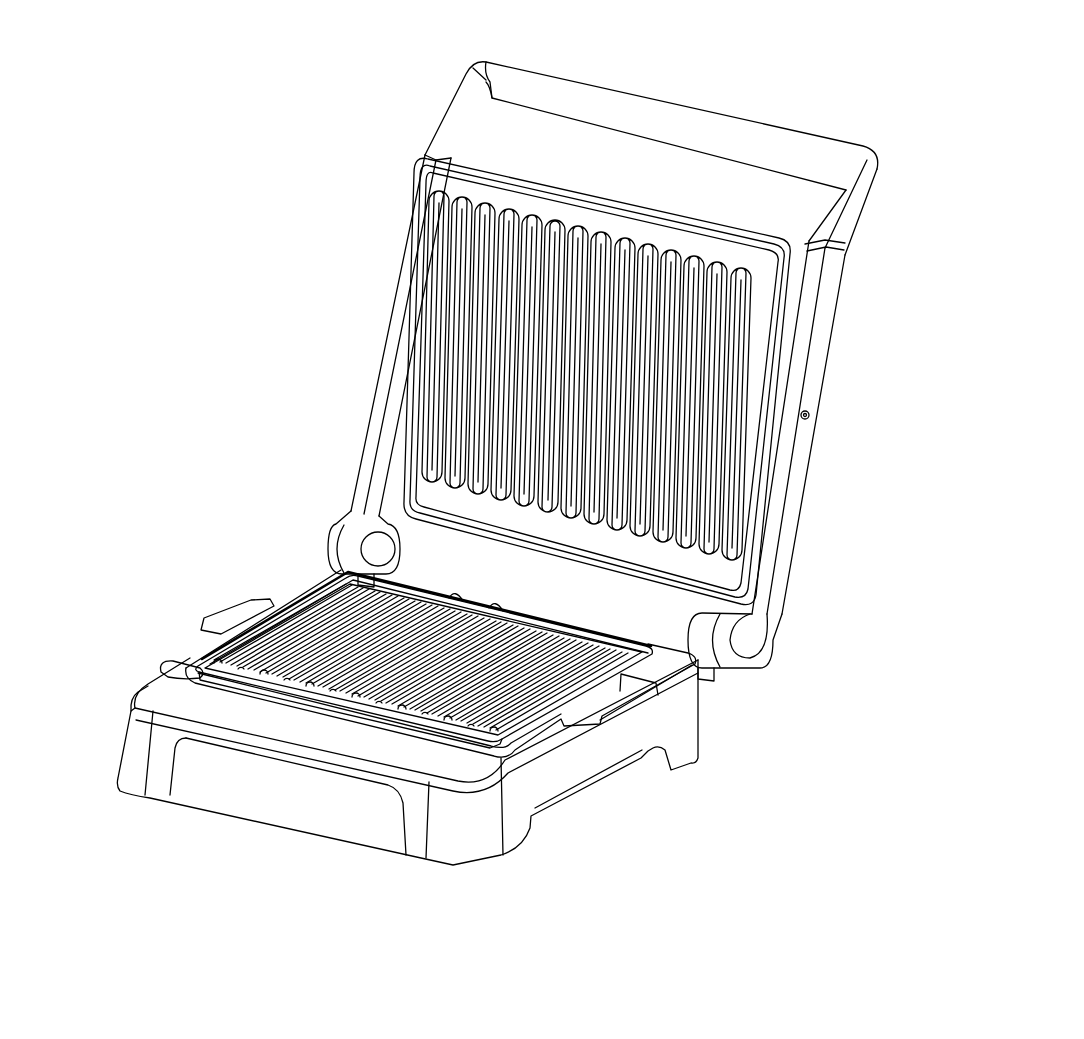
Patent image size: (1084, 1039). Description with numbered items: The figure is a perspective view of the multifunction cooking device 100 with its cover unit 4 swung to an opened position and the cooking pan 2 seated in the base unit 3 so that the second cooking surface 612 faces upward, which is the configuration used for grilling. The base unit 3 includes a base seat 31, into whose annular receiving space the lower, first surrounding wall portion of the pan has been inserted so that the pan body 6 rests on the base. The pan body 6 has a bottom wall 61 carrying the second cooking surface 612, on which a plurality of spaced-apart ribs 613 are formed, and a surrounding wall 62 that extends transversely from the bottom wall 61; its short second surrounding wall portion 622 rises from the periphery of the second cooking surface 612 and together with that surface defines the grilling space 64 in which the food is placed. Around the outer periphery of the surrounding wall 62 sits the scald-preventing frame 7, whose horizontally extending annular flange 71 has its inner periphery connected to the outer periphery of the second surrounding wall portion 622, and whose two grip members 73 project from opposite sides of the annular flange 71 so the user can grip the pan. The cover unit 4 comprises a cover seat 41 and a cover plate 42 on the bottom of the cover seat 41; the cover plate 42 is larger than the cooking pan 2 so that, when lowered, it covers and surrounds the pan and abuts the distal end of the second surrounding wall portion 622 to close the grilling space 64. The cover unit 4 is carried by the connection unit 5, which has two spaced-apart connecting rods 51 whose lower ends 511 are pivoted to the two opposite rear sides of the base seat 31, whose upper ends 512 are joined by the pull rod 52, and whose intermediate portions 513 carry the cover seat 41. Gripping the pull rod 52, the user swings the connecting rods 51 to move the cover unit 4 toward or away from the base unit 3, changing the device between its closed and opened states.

The multifunction cooking device 100 is at (236, 322).
The cooking pan 2 is at (371, 738).
The base unit 3 is at (251, 832).
The base seat 31 is at (191, 772).
The cover unit 4 is at (603, 165).
The cover seat 41 is at (766, 327).
The cover plate 42 is at (680, 555).
The connection unit 5 is at (728, 92).
The connecting rods 51 is at (383, 402).
The lower ends 511 is at (742, 642).
The upper ends 512 is at (836, 226).
The intermediate portions 513 is at (798, 440).
The pull rod 52 is at (578, 88).
The pan body 6 is at (637, 752).
The bottom wall 61 is at (513, 690).
The second cooking surface 612 is at (515, 615).
The ribs 613 is at (487, 593).
The surrounding wall 62 is at (618, 670).
The second surrounding wall portion 622 is at (630, 662).
The grilling space 64 is at (130, 686).
The scald-preventing frame 7 is at (487, 742).
The annular flange 71 is at (162, 660).
The grip members 73 is at (233, 605).